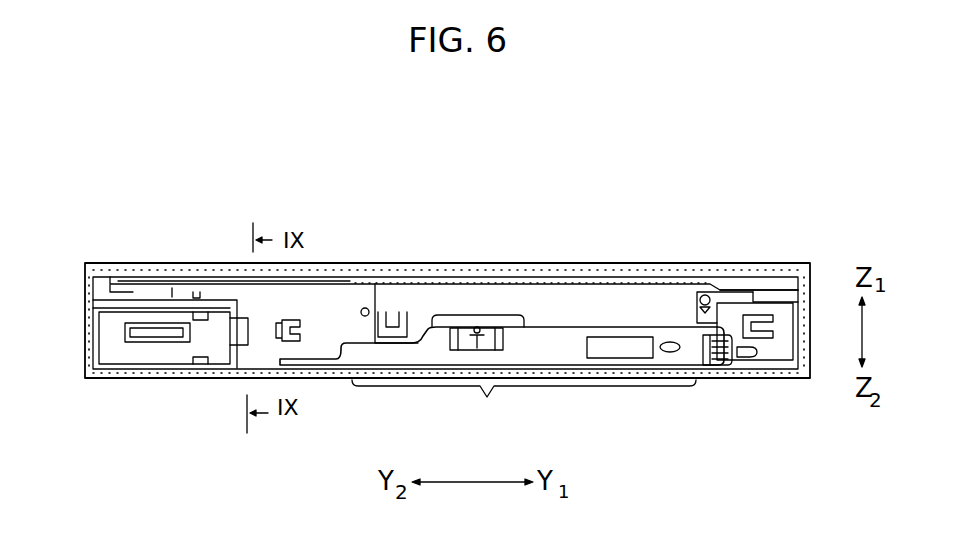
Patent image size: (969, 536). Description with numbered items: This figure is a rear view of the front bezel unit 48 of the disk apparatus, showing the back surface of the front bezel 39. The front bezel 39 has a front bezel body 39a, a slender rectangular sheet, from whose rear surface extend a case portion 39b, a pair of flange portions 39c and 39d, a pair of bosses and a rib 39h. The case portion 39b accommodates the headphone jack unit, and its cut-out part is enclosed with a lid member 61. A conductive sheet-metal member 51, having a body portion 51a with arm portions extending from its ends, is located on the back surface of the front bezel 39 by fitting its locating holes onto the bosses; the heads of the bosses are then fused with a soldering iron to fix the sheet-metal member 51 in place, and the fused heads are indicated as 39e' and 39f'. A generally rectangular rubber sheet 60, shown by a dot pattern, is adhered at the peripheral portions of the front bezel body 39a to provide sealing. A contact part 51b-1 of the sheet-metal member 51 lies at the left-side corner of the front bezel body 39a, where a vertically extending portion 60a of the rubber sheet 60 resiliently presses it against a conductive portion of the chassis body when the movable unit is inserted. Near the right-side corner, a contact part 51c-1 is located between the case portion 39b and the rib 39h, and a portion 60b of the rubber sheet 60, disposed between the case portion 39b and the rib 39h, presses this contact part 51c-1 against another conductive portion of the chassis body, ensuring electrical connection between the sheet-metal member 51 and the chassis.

The front bezel 39 is at (84, 262).
The front bezel body 39a is at (127, 263).
The case portion 39b is at (115, 383).
The flange portion 39c is at (768, 371).
The flange portion 39d is at (405, 312).
The fused head of boss 39e' is at (728, 262).
The fused head of boss 39f' is at (407, 269).
The rib 39h is at (208, 262).
The front bezel unit 48 is at (716, 153).
The sheet-metal member 51 is at (537, 365).
The body portion 51a is at (524, 408).
The contact part 51b-1 is at (782, 292).
The contact part 51c-1 is at (167, 297).
The rubber sheet 60 is at (579, 275).
The vertically extending portion 60a is at (813, 304).
The portion of rubber sheet 60b is at (127, 295).
The lid member 61 is at (170, 360).